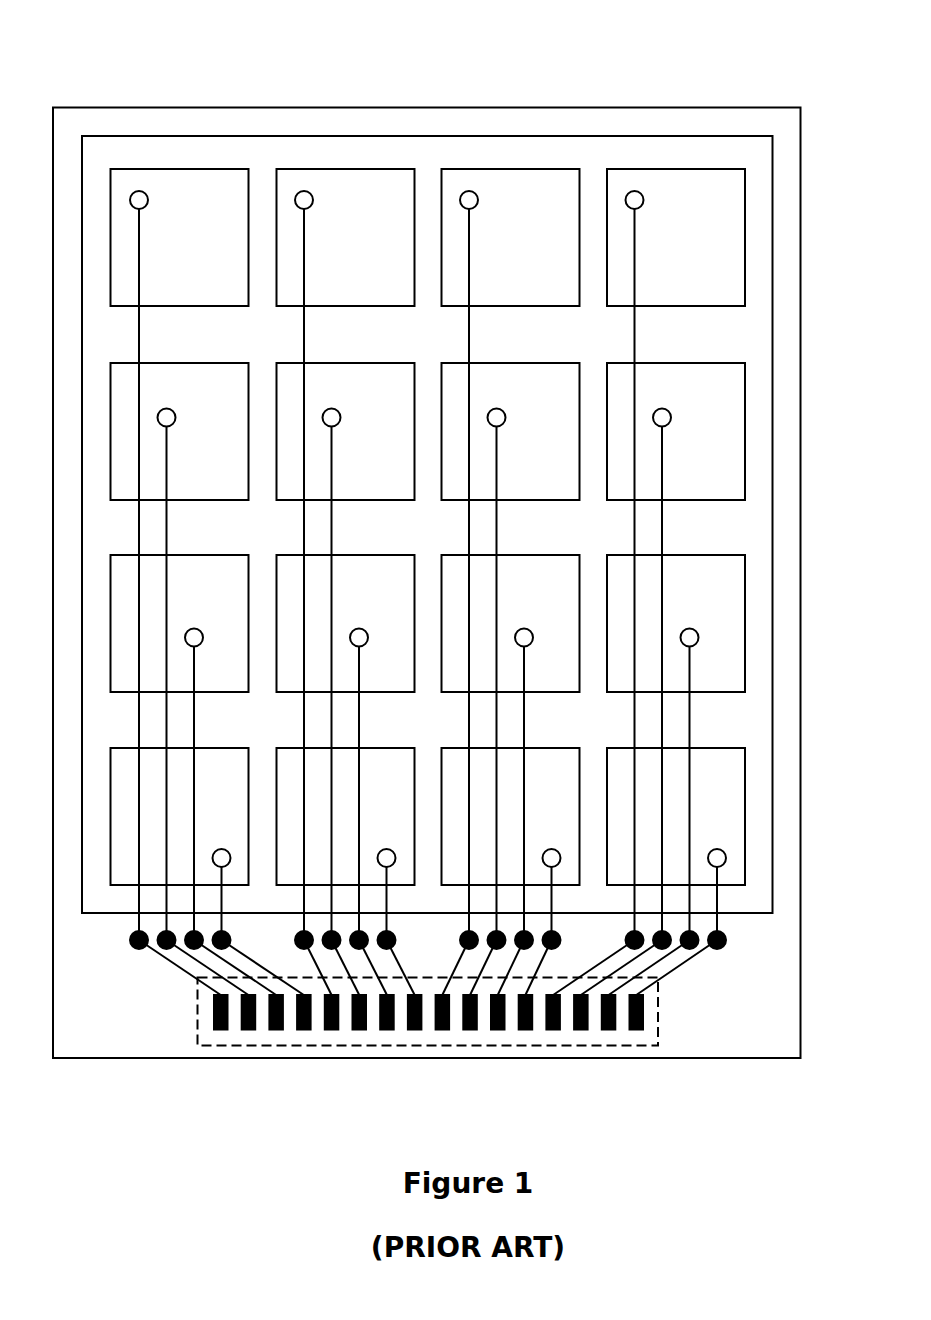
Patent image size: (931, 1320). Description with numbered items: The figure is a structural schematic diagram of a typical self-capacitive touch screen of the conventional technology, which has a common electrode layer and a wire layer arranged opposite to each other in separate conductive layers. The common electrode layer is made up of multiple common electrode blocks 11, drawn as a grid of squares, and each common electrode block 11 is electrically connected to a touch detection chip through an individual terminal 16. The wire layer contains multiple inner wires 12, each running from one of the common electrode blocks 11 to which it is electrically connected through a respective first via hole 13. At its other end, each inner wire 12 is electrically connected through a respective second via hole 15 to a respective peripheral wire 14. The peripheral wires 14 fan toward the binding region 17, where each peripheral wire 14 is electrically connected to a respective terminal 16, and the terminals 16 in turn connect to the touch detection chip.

The common electrode block 11 is at (514, 193).
The inner wire 12 is at (468, 267).
The first via hole 13 is at (307, 192).
The peripheral wire 14 is at (178, 968).
The second via hole 15 is at (722, 951).
The terminal 16 is at (614, 1027).
The binding region 17 is at (660, 1017).